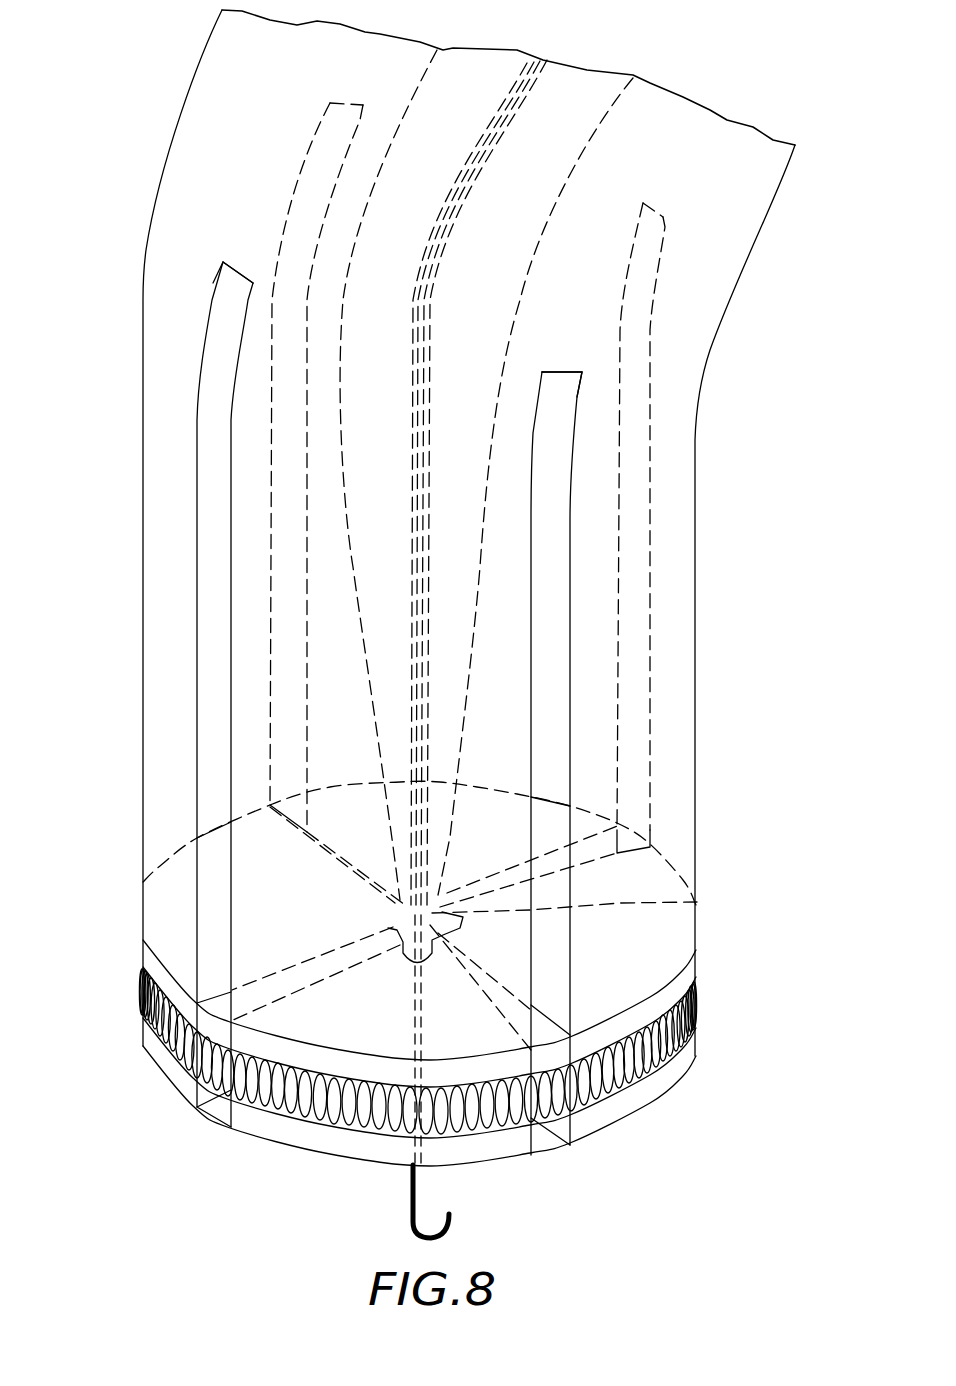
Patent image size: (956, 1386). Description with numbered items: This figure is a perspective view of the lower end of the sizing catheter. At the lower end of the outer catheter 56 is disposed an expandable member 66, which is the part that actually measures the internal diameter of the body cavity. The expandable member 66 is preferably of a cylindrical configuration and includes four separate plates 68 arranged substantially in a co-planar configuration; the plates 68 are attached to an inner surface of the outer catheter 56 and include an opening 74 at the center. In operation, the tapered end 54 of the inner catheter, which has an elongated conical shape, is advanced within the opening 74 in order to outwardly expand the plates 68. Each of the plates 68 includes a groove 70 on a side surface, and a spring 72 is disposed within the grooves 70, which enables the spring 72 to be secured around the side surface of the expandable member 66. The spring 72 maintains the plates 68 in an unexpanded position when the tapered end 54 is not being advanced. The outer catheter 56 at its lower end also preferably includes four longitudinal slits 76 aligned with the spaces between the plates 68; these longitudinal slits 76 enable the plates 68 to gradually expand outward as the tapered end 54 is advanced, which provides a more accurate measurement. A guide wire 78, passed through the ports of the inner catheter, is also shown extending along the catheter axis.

The tapered lower end 54 is at (357, 607).
The outer catheter 56 is at (142, 388).
The expandable member 66 is at (488, 1009).
The plates 68 is at (180, 882).
The groove 70 is at (676, 1062).
The spring 72 is at (333, 1103).
The opening 74 is at (697, 903).
The longitudinal slits 76 is at (310, 137).
The guide wire 78 is at (407, 1196).